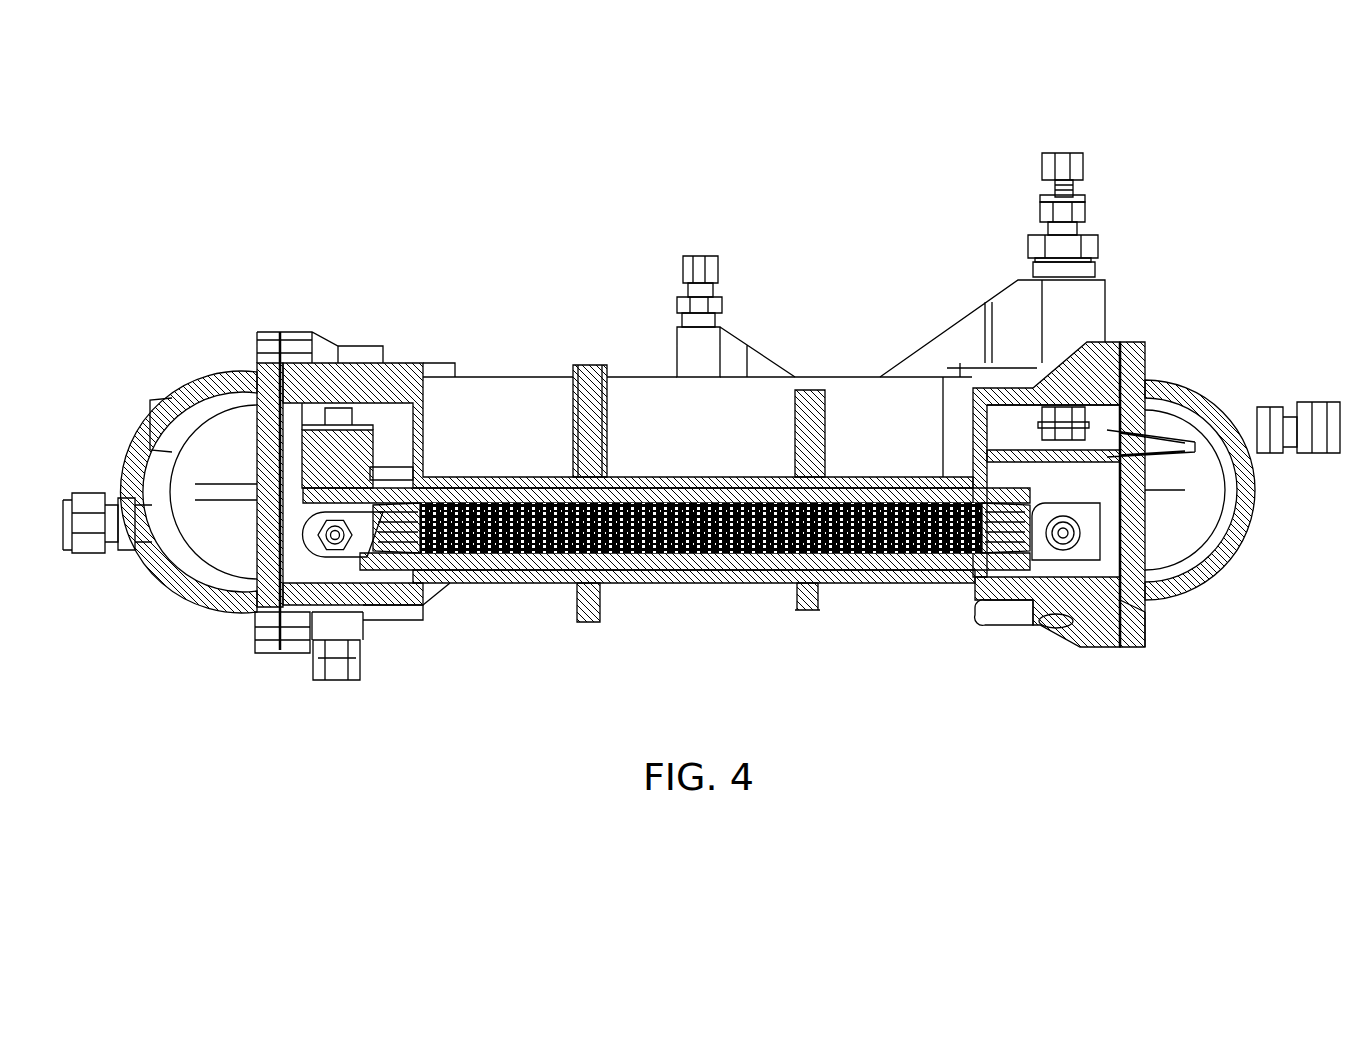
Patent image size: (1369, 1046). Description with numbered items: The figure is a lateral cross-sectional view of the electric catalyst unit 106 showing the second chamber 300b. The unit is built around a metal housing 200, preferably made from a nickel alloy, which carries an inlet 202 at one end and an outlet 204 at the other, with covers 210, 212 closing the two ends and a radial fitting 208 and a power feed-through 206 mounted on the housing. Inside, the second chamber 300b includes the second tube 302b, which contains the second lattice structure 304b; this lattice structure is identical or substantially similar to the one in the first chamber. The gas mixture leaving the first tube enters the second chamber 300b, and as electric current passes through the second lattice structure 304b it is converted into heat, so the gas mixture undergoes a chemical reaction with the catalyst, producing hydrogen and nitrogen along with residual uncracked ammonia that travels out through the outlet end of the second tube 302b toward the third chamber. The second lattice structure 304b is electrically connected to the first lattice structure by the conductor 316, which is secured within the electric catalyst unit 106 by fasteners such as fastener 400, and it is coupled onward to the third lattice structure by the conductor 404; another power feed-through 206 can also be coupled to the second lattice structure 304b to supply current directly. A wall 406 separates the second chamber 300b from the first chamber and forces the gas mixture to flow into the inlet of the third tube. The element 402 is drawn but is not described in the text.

The electric catalyst unit 106 is at (864, 241).
The housing 200 is at (700, 487).
The inlet 202 is at (1318, 402).
The outlet 204 is at (88, 493).
The power feed-through 206 is at (345, 682).
The radial fitting 208 is at (680, 262).
The cover 210 is at (1200, 597).
The cover 212 is at (185, 578).
The second chamber 300b is at (385, 580).
The second tube 302b is at (648, 562).
The second lattice structure 304b is at (757, 557).
The conductor 316 is at (310, 540).
The fastener 400 is at (335, 545).
The flange 402 is at (1147, 612).
The conductor 404 is at (1058, 548).
The wall 406 is at (1193, 498).